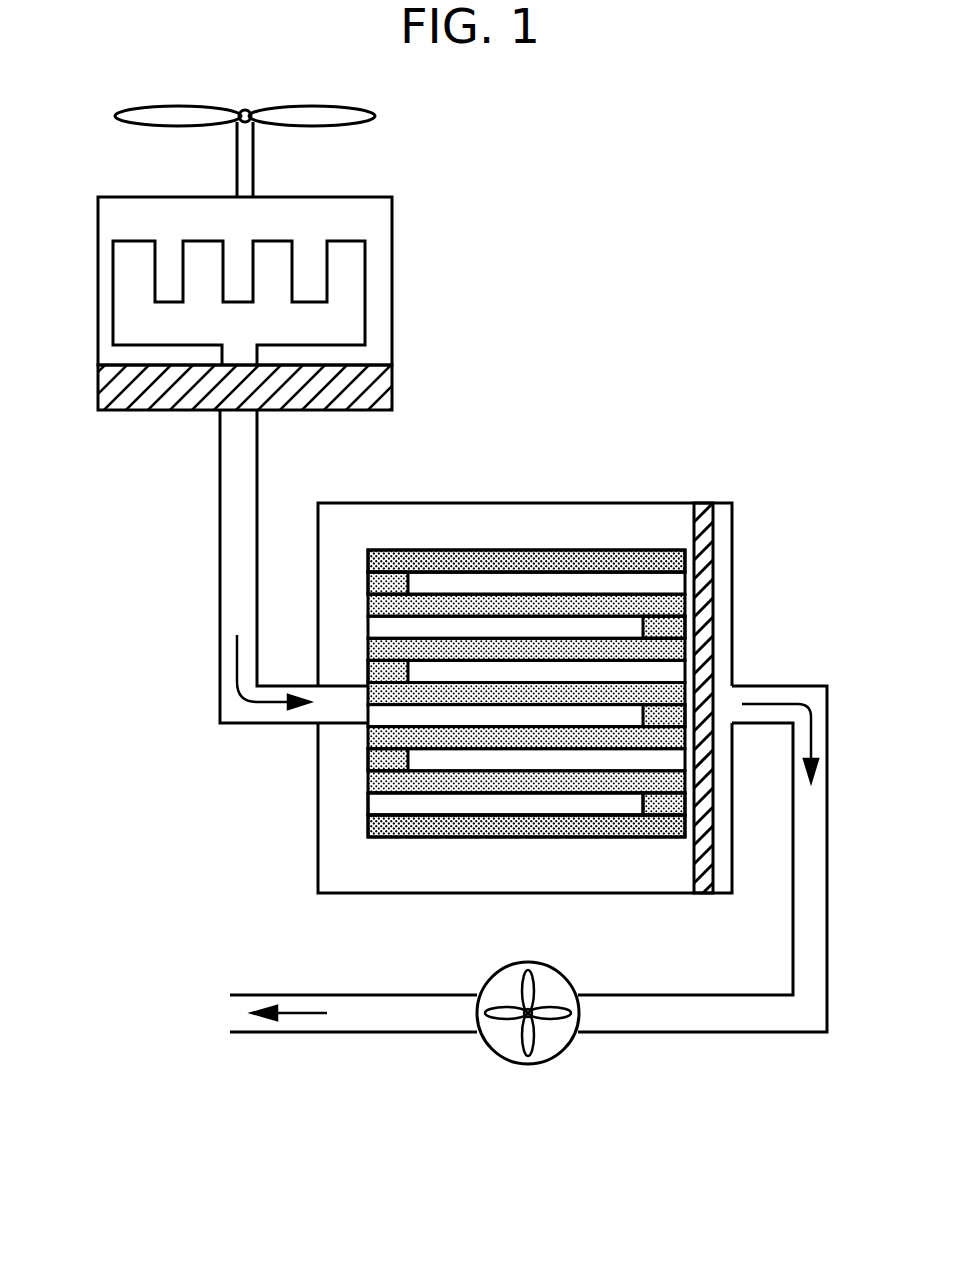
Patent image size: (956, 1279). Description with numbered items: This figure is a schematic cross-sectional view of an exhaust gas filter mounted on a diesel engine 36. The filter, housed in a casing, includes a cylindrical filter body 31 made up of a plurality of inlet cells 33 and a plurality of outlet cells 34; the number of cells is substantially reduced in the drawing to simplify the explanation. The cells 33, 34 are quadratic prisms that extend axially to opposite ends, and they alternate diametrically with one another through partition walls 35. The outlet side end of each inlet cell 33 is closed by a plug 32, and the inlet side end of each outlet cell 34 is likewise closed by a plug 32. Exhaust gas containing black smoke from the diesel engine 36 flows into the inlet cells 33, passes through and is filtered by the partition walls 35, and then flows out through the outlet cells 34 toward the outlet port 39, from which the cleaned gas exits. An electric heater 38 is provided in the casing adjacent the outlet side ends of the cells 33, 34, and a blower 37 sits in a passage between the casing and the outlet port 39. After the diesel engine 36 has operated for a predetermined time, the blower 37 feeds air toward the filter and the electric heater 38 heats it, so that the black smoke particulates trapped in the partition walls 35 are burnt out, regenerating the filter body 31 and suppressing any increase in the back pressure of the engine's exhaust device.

The filter body 31 is at (580, 547).
The plug 32 is at (395, 580).
The inlet cells 33 is at (390, 803).
The outlet cells 34 is at (645, 672).
The partition walls 35 is at (638, 562).
The diesel engine 36 is at (392, 306).
The blower 37 is at (508, 1065).
The electric heater 38 is at (705, 566).
The outlet port 39 is at (233, 1018).